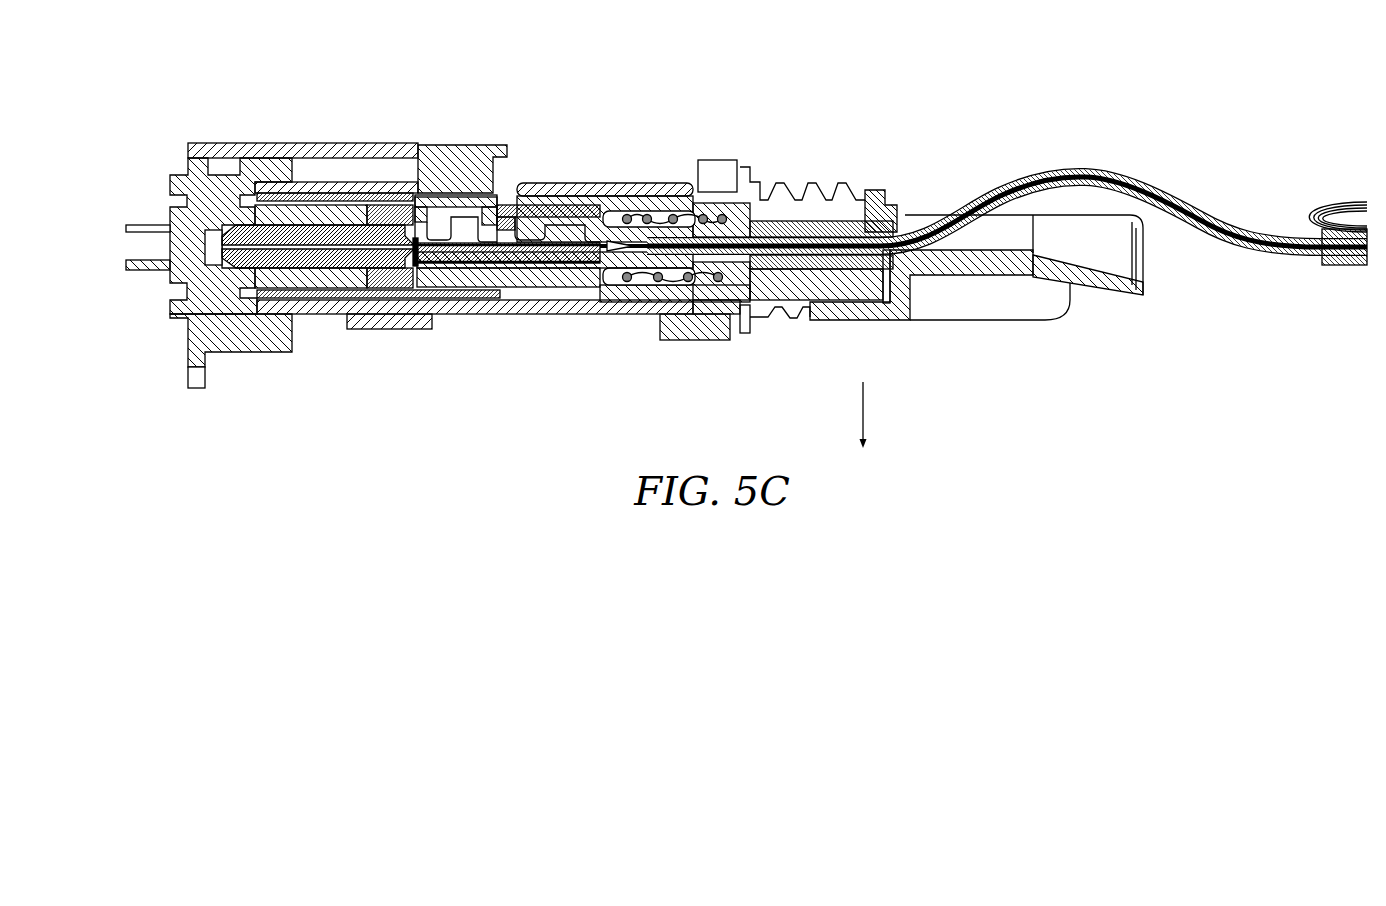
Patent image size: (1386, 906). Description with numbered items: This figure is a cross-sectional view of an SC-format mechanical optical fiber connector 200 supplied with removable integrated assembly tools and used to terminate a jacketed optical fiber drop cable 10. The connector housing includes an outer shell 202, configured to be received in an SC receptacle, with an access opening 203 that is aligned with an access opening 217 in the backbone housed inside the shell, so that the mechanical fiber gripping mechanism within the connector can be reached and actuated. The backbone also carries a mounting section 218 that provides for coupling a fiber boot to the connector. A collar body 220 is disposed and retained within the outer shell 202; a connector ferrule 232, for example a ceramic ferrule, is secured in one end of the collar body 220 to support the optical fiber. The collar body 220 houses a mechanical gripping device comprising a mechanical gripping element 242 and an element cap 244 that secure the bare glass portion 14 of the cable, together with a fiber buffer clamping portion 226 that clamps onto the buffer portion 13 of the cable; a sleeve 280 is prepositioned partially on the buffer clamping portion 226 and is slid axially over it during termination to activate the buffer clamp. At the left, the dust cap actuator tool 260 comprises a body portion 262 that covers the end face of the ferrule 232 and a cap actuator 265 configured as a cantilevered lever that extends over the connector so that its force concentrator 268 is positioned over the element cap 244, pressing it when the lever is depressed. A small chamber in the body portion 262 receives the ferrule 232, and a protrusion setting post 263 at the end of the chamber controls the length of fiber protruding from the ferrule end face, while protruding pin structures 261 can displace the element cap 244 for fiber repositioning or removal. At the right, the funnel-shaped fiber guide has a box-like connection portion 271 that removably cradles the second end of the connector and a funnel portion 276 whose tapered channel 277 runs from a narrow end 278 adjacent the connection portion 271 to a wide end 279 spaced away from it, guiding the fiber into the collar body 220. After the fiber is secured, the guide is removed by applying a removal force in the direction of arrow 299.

The optical fiber cable 10 is at (1335, 284).
The buffer portion 13 is at (1173, 192).
The bare glass portion 14 is at (1089, 178).
The optical fiber connector 200 is at (800, 36).
The outer shell 202 is at (615, 317).
The access opening 203 is at (498, 190).
The access opening 217 is at (510, 200).
The mounting section 218 is at (803, 182).
The collar body 220 is at (572, 286).
The fiber buffer clamping portion 226 is at (744, 216).
The connector ferrule 232 is at (325, 258).
The mechanical gripping element 242 is at (455, 228).
The element cap 244 is at (413, 192).
The dust cap actuator tool 260 is at (166, 184).
The pin structures 261 is at (150, 224).
The body portion 262 is at (208, 296).
The protrusion setting post 263 is at (215, 243).
The cap actuator 265 is at (288, 143).
The force concentrator 268 is at (425, 182).
The connection portion 271 is at (838, 320).
The funnel portion 276 is at (1103, 287).
The channel 277 is at (1007, 232).
The narrow end 278 is at (895, 210).
The wide end 279 is at (1147, 288).
The sleeve 280 is at (847, 213).
The directional arrow 299 is at (862, 408).